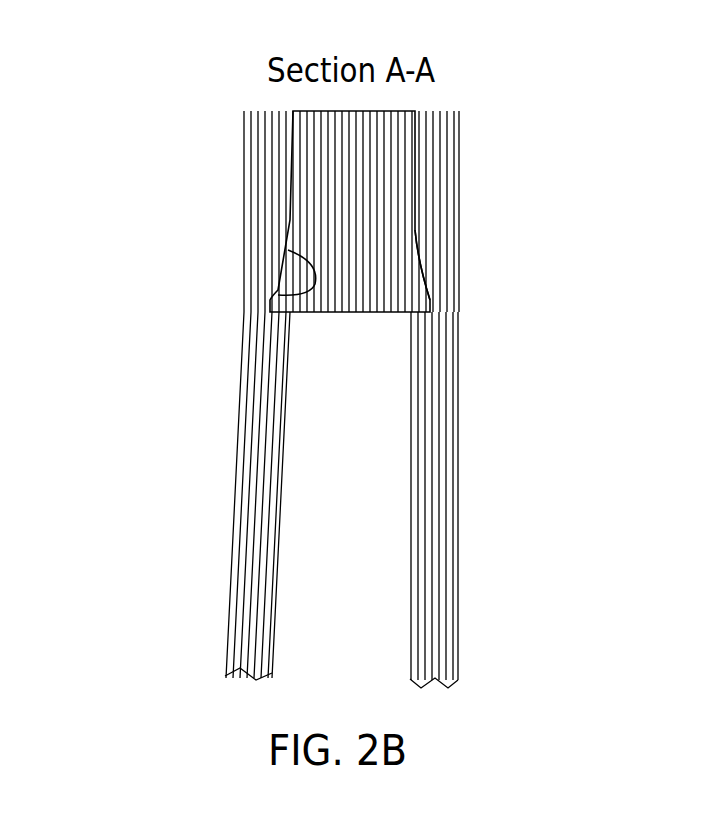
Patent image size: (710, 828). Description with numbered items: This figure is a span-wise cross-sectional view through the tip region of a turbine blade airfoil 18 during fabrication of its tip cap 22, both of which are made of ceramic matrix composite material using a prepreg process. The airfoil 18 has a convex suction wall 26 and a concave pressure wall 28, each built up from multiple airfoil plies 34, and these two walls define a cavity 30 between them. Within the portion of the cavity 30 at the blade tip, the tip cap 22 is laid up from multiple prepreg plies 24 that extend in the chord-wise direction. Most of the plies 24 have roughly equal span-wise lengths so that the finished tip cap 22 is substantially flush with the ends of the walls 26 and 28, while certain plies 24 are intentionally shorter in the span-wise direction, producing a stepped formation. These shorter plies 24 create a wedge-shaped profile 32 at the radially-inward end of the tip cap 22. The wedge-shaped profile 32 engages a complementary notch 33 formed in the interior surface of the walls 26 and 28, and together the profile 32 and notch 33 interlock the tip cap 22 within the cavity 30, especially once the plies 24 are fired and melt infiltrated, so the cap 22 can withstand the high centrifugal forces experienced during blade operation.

The airfoil 18 is at (602, 205).
The tip cap 22 is at (400, 203).
The prepreg plies 24 is at (363, 197).
The convex (suction) wall 26 is at (458, 475).
The concave (pressure) wall 28 is at (236, 483).
The cavity 30 is at (318, 557).
The wedge-shaped profile 32 is at (432, 293).
The notch 33 is at (313, 280).
The airfoil plies 34 is at (262, 383).